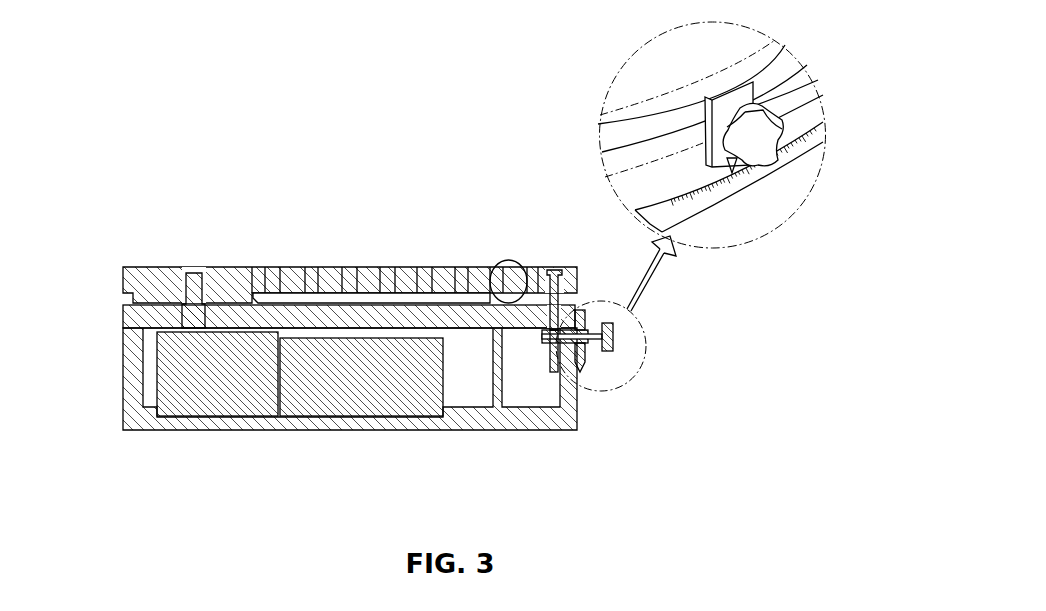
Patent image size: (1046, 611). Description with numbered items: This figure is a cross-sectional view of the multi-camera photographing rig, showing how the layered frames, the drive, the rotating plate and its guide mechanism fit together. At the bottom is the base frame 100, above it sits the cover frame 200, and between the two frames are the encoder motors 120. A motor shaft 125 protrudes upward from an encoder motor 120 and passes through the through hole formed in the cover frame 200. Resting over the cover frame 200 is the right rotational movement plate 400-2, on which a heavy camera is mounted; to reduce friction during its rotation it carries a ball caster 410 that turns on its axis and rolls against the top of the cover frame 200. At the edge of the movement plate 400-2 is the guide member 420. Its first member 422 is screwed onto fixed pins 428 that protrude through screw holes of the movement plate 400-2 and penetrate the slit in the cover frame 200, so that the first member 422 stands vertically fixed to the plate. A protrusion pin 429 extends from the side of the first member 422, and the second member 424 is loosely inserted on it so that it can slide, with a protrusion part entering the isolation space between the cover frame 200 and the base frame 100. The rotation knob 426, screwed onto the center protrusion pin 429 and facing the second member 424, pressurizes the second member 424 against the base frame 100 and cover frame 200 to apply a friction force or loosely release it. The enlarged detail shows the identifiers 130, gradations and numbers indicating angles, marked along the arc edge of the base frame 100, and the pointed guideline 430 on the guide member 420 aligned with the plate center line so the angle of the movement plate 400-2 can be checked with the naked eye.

The base frame 100 is at (485, 433).
The encoder motors 120 is at (208, 398).
The motor shaft 125 is at (184, 291).
The cover frame 200 is at (133, 313).
The right rotational movement plate 400-2 is at (290, 282).
The ball caster 410 is at (506, 259).
The fixed pins 428 is at (556, 269).
The guide member 420 is at (640, 388).
The first member 422 is at (559, 372).
The second member 424 is at (586, 358).
The rotation knob 426 is at (614, 326).
The protrusion pin 429 is at (542, 338).
The identifiers 130 is at (735, 151).
The pointed guideline 430 is at (733, 169).